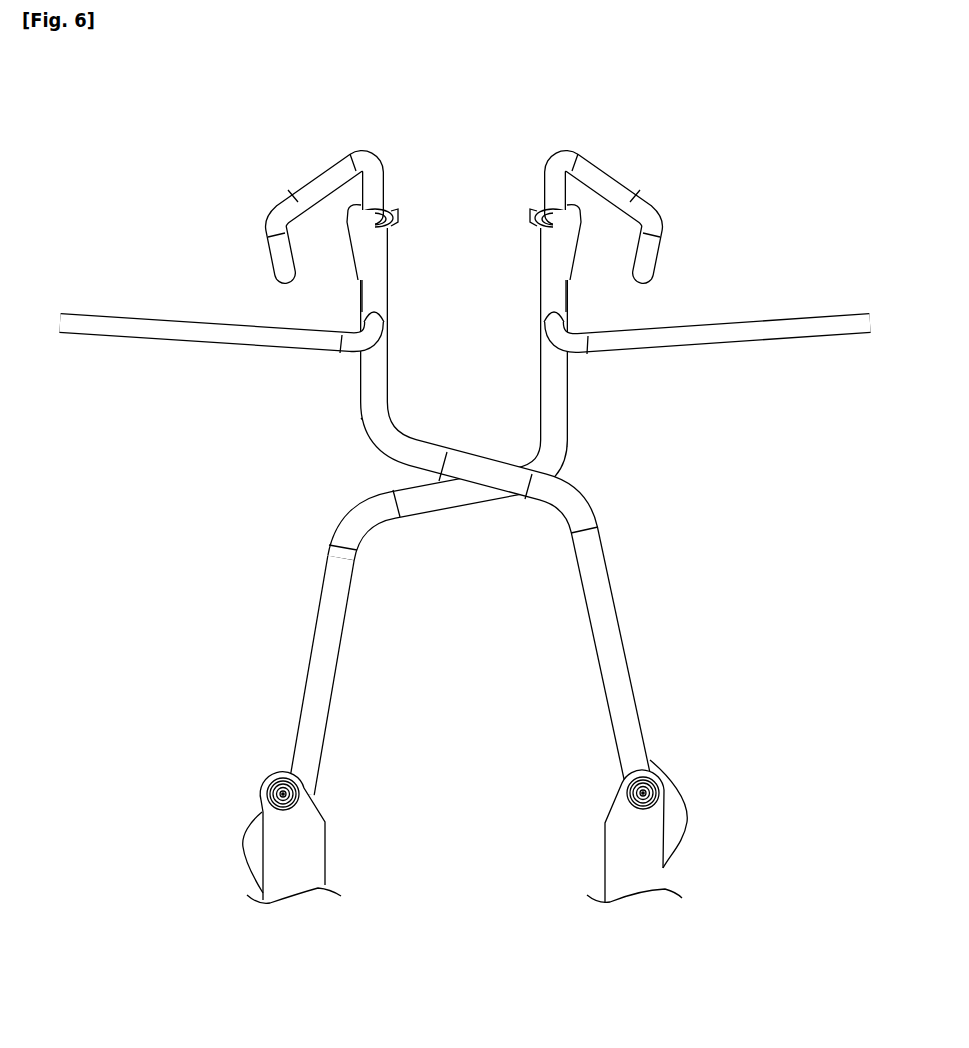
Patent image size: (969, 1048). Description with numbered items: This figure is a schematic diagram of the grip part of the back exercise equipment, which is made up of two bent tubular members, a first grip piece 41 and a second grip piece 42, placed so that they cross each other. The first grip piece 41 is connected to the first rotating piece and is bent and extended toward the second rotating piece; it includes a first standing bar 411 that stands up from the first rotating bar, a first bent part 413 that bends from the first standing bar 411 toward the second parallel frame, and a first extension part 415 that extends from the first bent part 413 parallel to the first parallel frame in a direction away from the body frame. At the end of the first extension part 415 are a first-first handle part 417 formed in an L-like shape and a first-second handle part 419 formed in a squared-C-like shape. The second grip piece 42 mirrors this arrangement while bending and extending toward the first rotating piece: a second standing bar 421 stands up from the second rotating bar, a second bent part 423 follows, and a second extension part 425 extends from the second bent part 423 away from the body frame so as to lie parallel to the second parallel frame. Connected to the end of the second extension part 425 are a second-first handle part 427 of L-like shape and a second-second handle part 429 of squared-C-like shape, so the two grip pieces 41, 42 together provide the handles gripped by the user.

The first grip piece 41 is at (424, 511).
The first standing bar 411 is at (603, 623).
The first bent part 413 is at (470, 466).
The first extension part 415 is at (361, 388).
The 1-1 handle part 417 is at (122, 325).
The 1-2 handle part 419 is at (319, 180).
The second grip piece 42 is at (504, 511).
The second standing bar 421 is at (328, 622).
The second bent part 423 is at (413, 503).
The second extension part 425 is at (568, 388).
The 2-1 handle part 427 is at (808, 325).
The 2-2 handle part 429 is at (609, 180).